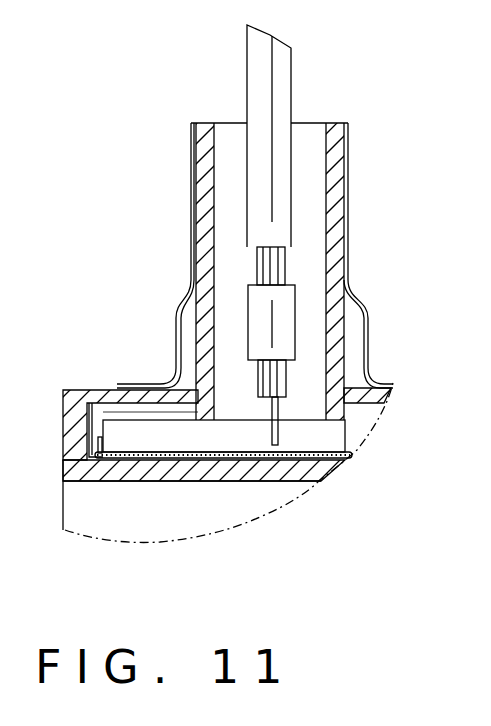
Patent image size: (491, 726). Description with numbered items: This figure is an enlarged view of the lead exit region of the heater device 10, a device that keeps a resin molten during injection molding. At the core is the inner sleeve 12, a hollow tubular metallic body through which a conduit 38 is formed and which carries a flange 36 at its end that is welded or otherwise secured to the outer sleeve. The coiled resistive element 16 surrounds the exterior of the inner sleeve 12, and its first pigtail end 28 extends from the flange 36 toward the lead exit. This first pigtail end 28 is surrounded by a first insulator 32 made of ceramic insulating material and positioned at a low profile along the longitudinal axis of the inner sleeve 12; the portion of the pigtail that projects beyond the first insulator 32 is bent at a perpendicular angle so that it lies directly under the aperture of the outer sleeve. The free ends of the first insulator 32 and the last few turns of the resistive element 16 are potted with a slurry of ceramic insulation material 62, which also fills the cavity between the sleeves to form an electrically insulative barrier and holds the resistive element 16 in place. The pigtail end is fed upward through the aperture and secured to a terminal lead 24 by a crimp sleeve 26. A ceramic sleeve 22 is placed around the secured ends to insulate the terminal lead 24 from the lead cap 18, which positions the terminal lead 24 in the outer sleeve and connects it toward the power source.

The heater device 10 is at (176, 122).
The inner sleeve 12 is at (265, 482).
The resistive element 16 is at (178, 440).
The lead cap 18 is at (350, 261).
The ceramic sleeve 22 is at (327, 157).
The terminal leads 24 is at (275, 265).
The crimp sleeves 26 is at (273, 338).
The first pigtail end 28 is at (323, 478).
The first insulator 32 is at (88, 460).
The flange 36 is at (63, 440).
The conduit 38 is at (147, 417).
The ceramic insulation material 62 is at (120, 413).